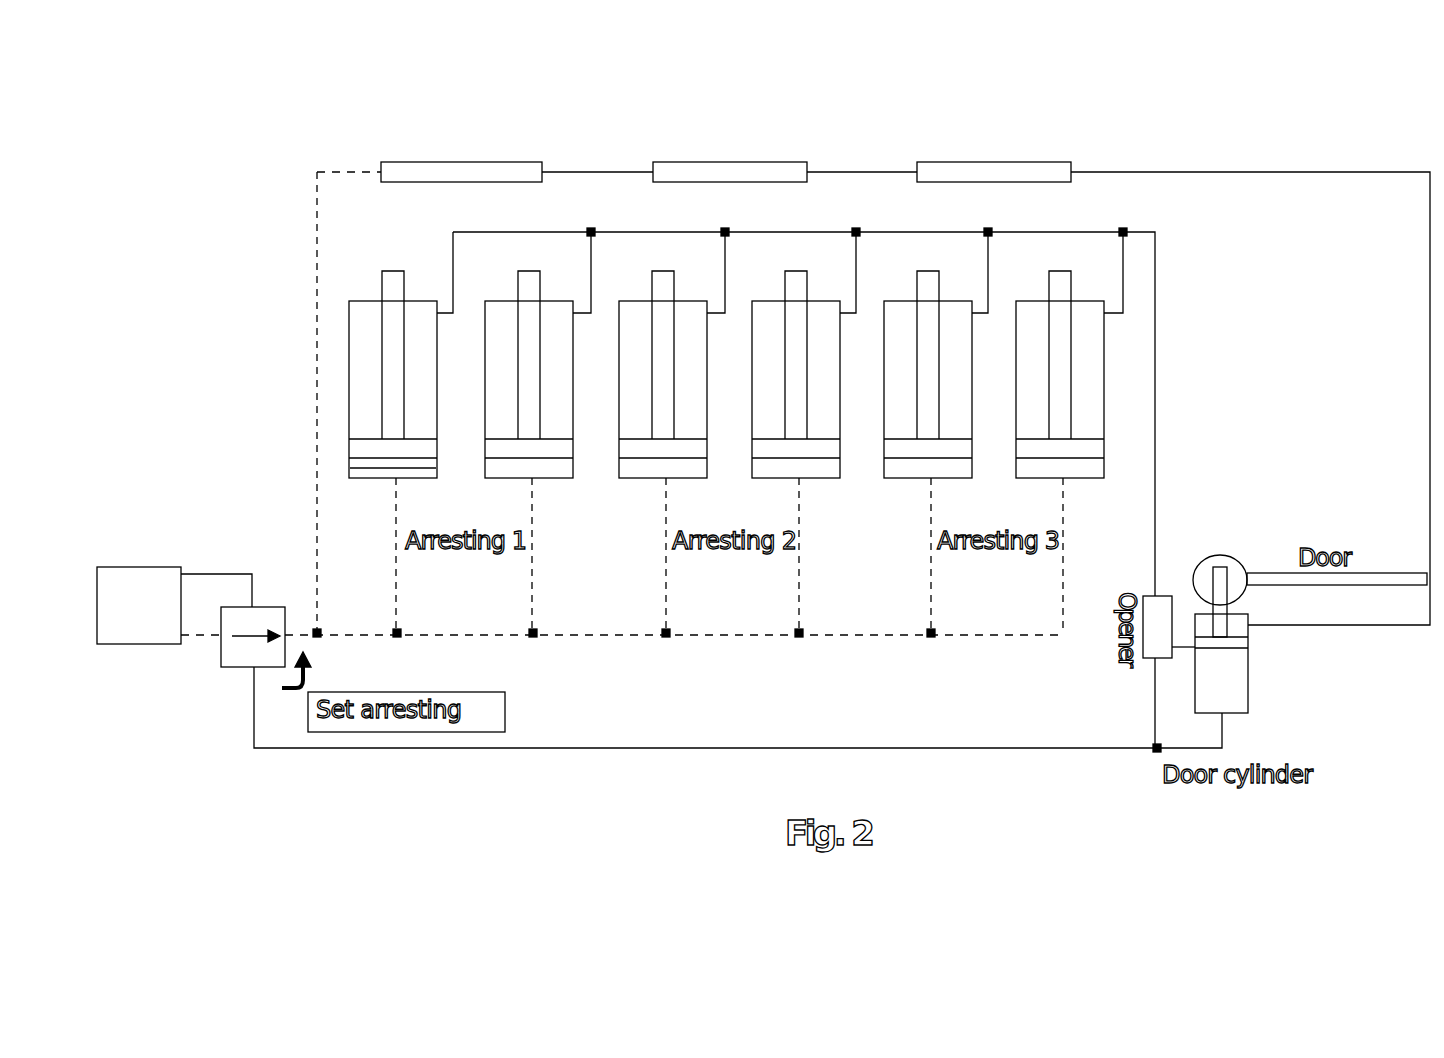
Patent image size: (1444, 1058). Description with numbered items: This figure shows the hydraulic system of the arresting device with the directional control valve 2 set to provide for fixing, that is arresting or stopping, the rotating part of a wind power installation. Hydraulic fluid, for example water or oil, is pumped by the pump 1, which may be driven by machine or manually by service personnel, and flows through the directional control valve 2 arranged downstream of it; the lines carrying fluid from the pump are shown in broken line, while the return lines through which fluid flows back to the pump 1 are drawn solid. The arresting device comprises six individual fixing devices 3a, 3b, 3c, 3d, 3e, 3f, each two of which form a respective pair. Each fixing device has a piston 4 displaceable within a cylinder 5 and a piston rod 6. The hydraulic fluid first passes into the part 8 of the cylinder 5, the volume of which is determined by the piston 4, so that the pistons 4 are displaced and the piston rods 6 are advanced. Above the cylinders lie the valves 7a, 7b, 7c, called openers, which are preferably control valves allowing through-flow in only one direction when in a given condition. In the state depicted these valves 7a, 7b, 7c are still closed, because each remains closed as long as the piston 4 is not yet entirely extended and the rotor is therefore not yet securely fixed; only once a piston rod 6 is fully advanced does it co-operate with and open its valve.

The pump 1 is at (117, 577).
The directional control valve 2 is at (265, 605).
The fixing device 3a is at (361, 432).
The fixing device 3b is at (551, 479).
The fixing device 3c is at (685, 479).
The fixing device 3d is at (818, 479).
The fixing device 3e is at (950, 479).
The fixing device 3f is at (1082, 479).
The piston 4 is at (363, 450).
The cylinder 5 is at (372, 482).
The piston rod 6 is at (396, 375).
The valve (opener) 7a is at (461, 186).
The valve (opener) 7b is at (730, 186).
The valve (opener) 7c is at (994, 186).
The part of the cylinder 8 is at (415, 479).